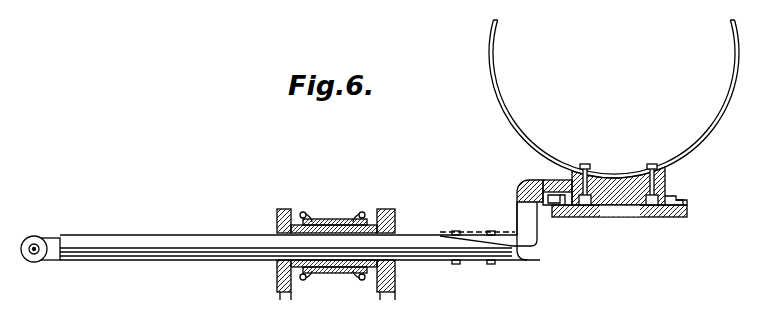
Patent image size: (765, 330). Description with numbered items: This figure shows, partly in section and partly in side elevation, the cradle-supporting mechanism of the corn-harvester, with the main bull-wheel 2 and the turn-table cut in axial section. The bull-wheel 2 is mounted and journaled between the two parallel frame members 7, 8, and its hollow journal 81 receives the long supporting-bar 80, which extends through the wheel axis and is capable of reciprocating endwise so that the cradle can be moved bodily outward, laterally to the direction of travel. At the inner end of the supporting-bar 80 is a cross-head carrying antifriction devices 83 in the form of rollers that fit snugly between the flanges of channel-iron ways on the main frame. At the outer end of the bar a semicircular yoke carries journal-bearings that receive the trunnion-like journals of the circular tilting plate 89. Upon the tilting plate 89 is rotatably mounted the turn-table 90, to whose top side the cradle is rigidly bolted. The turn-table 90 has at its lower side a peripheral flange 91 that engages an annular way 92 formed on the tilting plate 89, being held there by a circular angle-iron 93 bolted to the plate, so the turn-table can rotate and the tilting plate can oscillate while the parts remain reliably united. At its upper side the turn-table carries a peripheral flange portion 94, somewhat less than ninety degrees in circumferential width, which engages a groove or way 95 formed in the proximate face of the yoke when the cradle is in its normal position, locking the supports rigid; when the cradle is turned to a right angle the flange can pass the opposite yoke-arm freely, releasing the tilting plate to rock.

The bull-wheel 2 is at (336, 221).
The frame member 7 is at (277, 218).
The frame member 8 is at (396, 221).
The supporting-bar 80 is at (228, 252).
The hollow journal 81 is at (275, 268).
The antifriction devices 83 is at (36, 262).
The tilting plate 89 is at (666, 218).
The turn-table 90 is at (666, 186).
The peripheral flange 91 is at (565, 207).
The annular way 92 is at (685, 205).
The circular angle-iron 93 is at (680, 199).
The peripheral flange portion 94 is at (560, 181).
The groove or way 95 is at (547, 203).